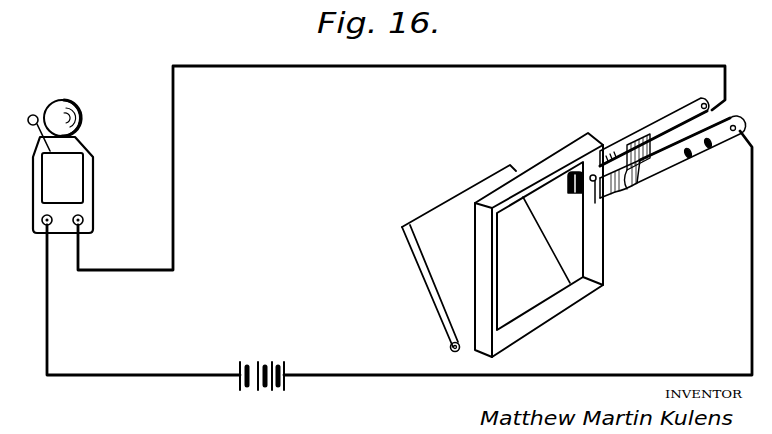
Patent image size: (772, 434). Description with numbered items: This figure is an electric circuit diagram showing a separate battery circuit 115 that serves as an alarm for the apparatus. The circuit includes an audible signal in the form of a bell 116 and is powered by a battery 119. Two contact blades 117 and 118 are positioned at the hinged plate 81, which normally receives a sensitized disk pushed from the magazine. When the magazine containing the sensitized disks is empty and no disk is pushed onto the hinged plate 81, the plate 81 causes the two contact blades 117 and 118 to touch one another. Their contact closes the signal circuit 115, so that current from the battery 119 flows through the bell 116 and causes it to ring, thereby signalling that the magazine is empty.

The hinged plate 81 is at (437, 263).
The battery circuit 115 is at (515, 64).
The bell 116 is at (78, 112).
The contact blade 117 is at (641, 193).
The contact blade 118 is at (617, 153).
The battery 119 is at (272, 391).